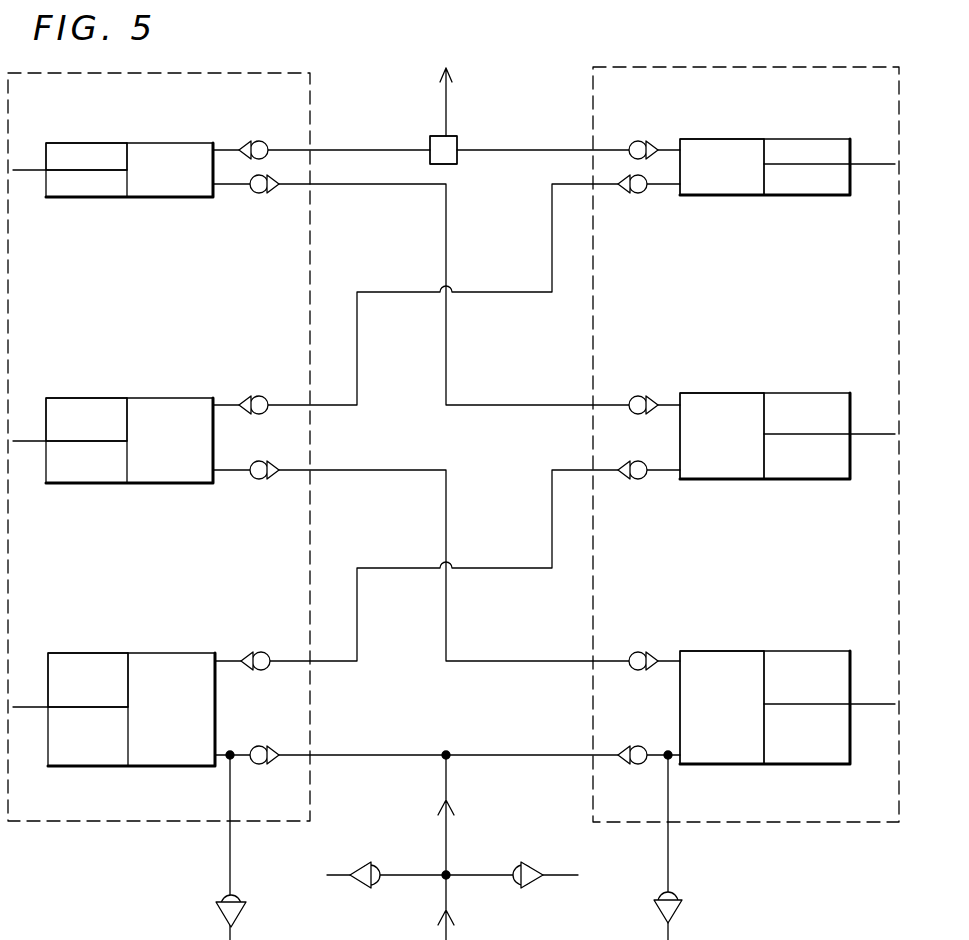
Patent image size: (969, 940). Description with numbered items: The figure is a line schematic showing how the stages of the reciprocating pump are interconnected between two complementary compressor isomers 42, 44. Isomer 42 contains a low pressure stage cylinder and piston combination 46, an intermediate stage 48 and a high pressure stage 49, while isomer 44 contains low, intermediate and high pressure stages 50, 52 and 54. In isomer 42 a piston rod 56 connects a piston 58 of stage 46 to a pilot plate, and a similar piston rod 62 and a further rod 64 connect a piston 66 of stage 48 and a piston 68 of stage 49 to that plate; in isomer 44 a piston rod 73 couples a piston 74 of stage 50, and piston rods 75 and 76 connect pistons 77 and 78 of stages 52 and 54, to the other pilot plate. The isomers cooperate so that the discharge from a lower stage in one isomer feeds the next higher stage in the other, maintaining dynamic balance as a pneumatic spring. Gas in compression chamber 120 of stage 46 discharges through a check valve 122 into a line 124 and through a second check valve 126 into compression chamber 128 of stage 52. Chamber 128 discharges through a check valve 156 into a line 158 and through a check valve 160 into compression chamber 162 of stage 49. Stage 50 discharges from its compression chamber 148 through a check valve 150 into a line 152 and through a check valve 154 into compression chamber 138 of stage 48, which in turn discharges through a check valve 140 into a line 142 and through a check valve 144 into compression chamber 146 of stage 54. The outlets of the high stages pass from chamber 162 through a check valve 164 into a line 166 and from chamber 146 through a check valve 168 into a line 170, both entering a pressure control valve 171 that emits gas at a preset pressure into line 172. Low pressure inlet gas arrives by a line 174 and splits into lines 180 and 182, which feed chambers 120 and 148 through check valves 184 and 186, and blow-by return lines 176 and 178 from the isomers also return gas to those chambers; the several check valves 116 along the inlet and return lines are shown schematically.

The compressor isomer 42 is at (100, 836).
The compressor isomer 44 is at (810, 834).
The low pressure stage cylinder and piston combination 46 is at (90, 660).
The intermediate pressure stage cylinder and piston combination 48 is at (85, 420).
The high pressure stage cylinder and piston combination 49 is at (77, 143).
The low pressure stage cylinder and piston combination 50 is at (745, 635).
The intermediate pressure stage cylinder and piston combination 52 is at (710, 393).
The high pressure stage cylinder and piston combination 54 is at (733, 139).
The piston rod 56 is at (30, 709).
The piston 58 is at (128, 748).
The piston rod 62 is at (30, 443).
The upper left output line 64 is at (24, 172).
The piston 66 is at (128, 408).
The piston 68 is at (127, 188).
The piston rod 73 is at (802, 704).
The piston 74 is at (765, 668).
The piston rod 75 is at (805, 434).
The piston rod 76 is at (812, 164).
The piston 77 is at (766, 465).
The piston 78 is at (765, 182).
The check valve 116 is at (241, 897).
The compression chamber 120 is at (185, 732).
The check valve 122 is at (283, 635).
The line 124 is at (357, 632).
The check valve 126 is at (638, 480).
The compression chamber 128 is at (733, 451).
The compression chamber 138 is at (185, 457).
The check valve 140 is at (268, 375).
The line 142 is at (418, 292).
The check valve 144 is at (638, 194).
The compression chamber 146 is at (765, 167).
The compression chamber 148 is at (745, 724).
The check valve 150 is at (640, 652).
The line 152 is at (449, 620).
The check valve 154 is at (275, 440).
The check valve 156 is at (637, 395).
The line 158 is at (447, 242).
The check valve 160 is at (258, 194).
The compression chamber 162 is at (187, 189).
The check valve 164 is at (278, 121).
The line 166 is at (386, 132).
The check valve 168 is at (638, 141).
The line 170 is at (458, 148).
The pressure control valve 171 is at (458, 160).
The line 172 is at (446, 109).
The line 174 is at (449, 905).
The blow-by return line 176 is at (230, 857).
The blow-by return line 178 is at (669, 866).
The line 180 is at (328, 755).
The line 182 is at (466, 755).
The check valve 184 is at (276, 790).
The check valve 186 is at (635, 768).